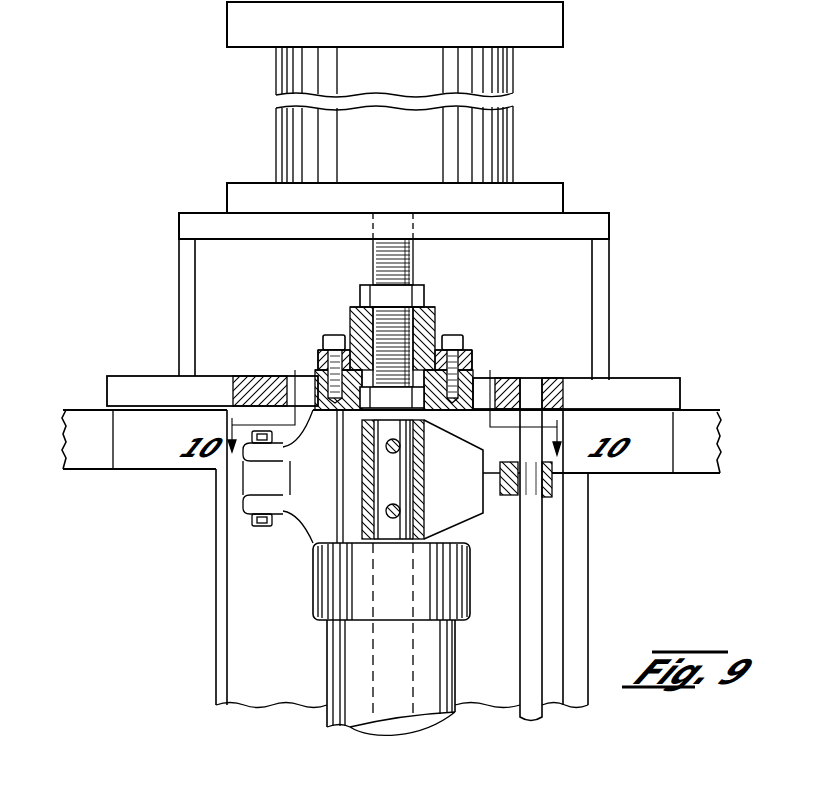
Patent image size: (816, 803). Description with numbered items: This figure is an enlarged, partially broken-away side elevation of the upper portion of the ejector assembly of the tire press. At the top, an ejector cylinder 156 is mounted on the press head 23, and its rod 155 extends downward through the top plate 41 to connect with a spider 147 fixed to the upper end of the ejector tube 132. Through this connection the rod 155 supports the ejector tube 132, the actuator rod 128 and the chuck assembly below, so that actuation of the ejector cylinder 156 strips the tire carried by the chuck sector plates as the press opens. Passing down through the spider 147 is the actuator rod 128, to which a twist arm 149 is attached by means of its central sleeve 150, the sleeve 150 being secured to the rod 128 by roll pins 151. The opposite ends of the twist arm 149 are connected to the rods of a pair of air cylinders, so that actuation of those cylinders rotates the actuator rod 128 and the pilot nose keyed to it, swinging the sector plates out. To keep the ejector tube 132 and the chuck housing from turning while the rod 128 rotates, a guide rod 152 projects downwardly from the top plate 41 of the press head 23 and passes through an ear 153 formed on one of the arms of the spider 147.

The ejector cylinder 156 is at (499, 134).
The rod 155 is at (412, 270).
The press head 23 is at (137, 370).
The top plate 41 is at (650, 382).
The roll pins 151 is at (388, 505).
The actuator rod 128 is at (400, 472).
The central sleeve 150 is at (420, 505).
The twist arm 149 is at (460, 516).
The spider 147 is at (312, 525).
The ear 153 is at (553, 488).
The ejector tube 132 is at (335, 645).
The guide rod 152 is at (522, 647).